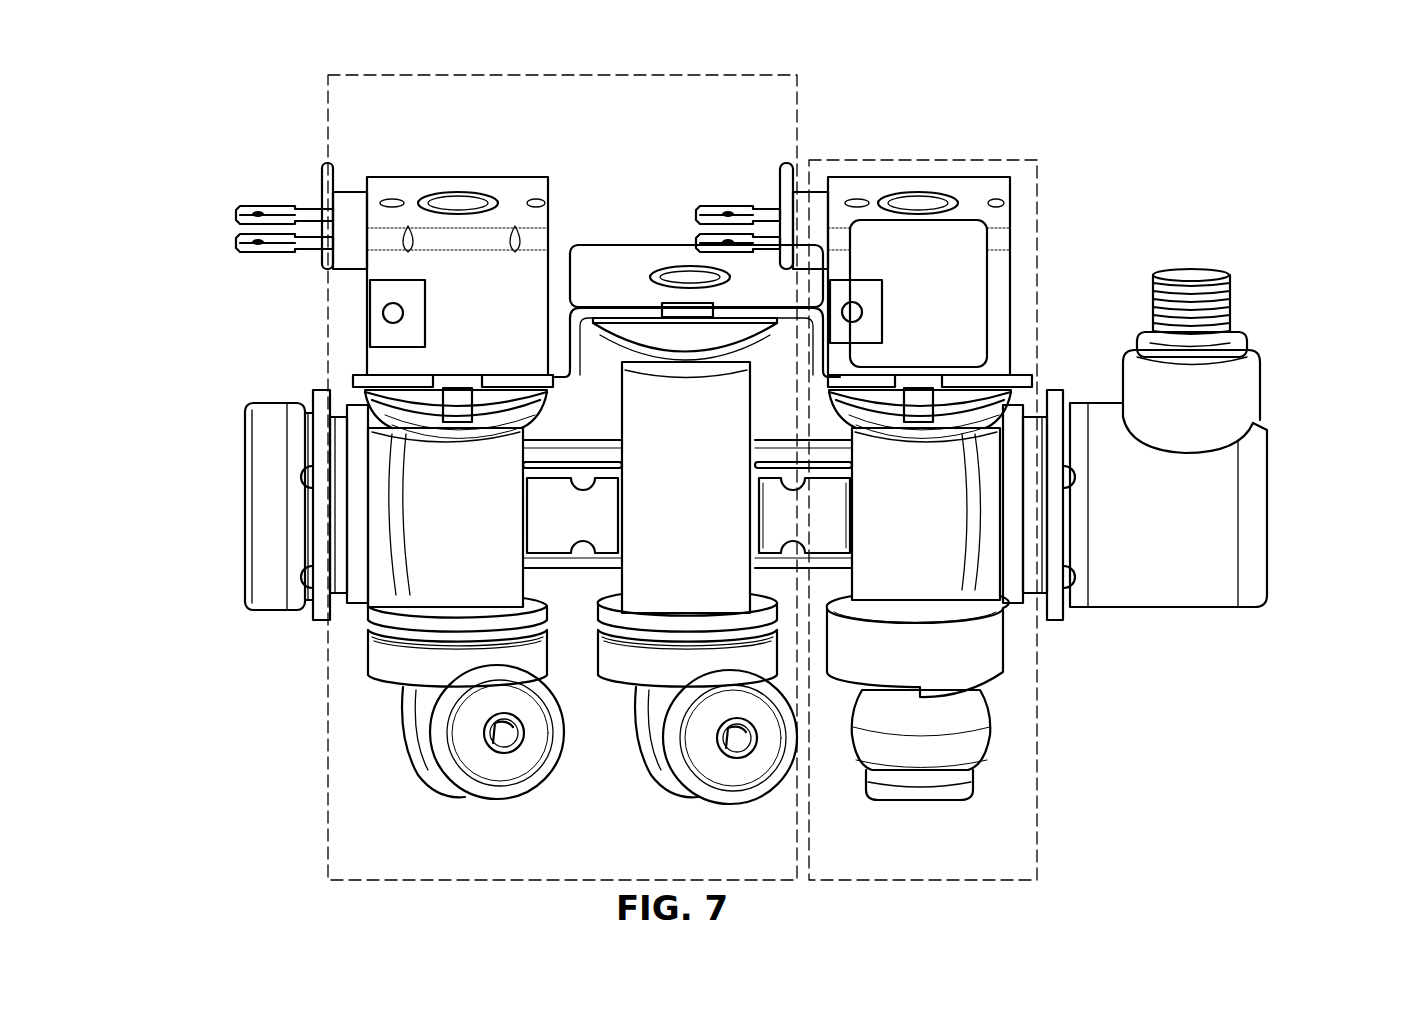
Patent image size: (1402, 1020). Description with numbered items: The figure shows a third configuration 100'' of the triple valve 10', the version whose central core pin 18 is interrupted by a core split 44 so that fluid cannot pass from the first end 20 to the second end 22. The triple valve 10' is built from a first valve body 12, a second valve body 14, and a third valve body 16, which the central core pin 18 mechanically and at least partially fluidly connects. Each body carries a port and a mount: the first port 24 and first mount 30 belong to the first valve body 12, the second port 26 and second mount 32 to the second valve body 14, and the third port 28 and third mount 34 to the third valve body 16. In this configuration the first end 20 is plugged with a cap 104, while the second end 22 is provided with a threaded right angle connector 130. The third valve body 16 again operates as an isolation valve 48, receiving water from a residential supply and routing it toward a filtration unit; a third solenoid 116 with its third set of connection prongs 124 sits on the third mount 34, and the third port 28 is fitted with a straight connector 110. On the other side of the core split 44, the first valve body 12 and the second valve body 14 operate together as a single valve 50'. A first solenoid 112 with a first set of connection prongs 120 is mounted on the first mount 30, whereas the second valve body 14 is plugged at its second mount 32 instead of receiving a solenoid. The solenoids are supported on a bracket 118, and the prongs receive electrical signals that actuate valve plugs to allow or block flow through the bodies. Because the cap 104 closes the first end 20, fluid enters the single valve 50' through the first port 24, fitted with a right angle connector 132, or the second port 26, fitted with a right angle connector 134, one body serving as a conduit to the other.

The third configuration 100'' is at (98, 105).
The single valve 50' is at (562, 442).
The isolation valve 48 is at (1012, 160).
The first set of connection prongs 120 is at (268, 206).
The third set of connection prongs 124 is at (731, 206).
The first solenoid 112 is at (437, 228).
The third solenoid 116 is at (950, 228).
The bracket 118 is at (605, 245).
The first mount 30 is at (395, 400).
The second mount 32 is at (686, 335).
The third mount 34 is at (980, 400).
The first valve body 12 is at (513, 452).
The second valve body 14 is at (730, 400).
The third valve body 16 is at (860, 447).
The triple valve 10' is at (1077, 363).
The central core pin 18 is at (570, 568).
The core split 44 is at (838, 530).
The first port 24 is at (392, 678).
The second port 26 is at (622, 678).
The third port 28 is at (850, 665).
The right angle connector 132 is at (492, 760).
The right angle connector 134 is at (724, 758).
The straight connector 110 is at (880, 790).
The cap 104 is at (262, 455).
The first end 20 is at (296, 615).
The second end 22 is at (1077, 620).
The threaded right angle connector 130 is at (1258, 500).